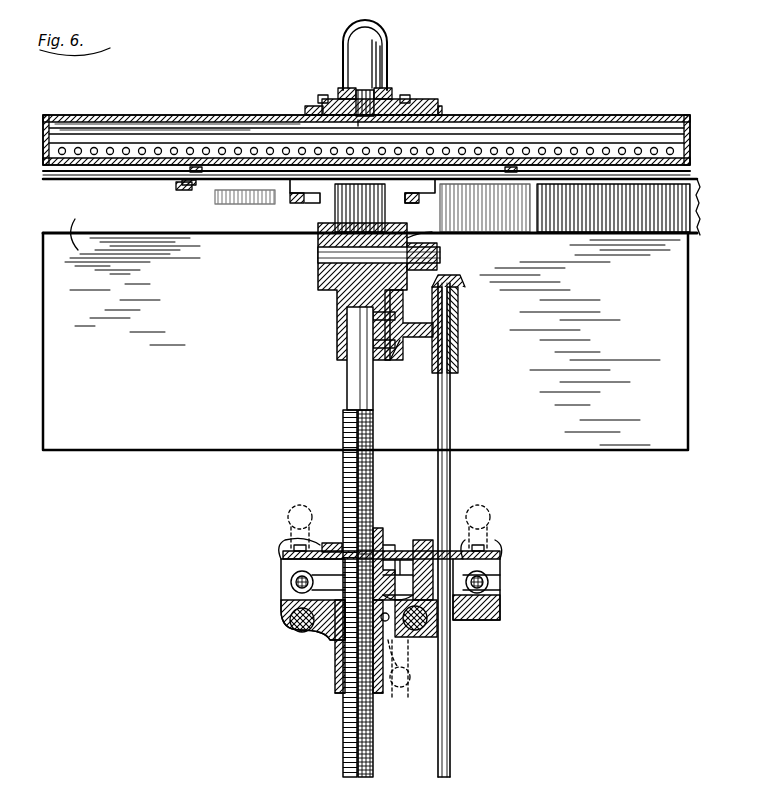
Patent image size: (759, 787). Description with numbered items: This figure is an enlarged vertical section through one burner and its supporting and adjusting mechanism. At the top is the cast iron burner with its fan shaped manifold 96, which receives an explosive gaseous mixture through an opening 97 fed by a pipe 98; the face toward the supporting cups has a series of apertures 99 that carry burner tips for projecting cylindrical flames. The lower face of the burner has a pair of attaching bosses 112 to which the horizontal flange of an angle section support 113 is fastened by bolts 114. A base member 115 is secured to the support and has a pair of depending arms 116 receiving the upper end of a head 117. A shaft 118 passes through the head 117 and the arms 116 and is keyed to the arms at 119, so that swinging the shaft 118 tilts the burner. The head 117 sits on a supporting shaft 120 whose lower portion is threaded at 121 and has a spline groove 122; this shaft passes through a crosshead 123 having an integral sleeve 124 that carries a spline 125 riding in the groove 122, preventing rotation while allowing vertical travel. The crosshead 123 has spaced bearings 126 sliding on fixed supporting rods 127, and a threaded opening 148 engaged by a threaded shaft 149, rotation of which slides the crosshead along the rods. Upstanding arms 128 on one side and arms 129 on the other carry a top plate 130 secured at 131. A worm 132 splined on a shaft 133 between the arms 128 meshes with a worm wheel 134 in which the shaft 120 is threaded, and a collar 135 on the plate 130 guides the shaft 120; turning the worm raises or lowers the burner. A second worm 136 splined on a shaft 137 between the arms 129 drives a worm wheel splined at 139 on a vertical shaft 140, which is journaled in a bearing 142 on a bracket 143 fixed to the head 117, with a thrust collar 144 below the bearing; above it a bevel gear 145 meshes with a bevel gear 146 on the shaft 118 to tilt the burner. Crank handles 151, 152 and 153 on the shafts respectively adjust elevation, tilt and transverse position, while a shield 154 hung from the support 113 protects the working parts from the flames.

The manifold 96 is at (452, 135).
The opening 97 is at (356, 133).
The pipe 98 is at (372, 44).
The apertures 99 is at (488, 150).
The attaching bosses 112 is at (168, 172).
The support 113 is at (365, 334).
The bolts 114 is at (182, 190).
The base member 115 is at (288, 197).
The depending arms 116 is at (428, 236).
The head 117 is at (372, 282).
The shaft 118 is at (335, 270).
The key 119 is at (318, 245).
The supporting shaft 120 is at (370, 385).
The threaded portion 121 is at (347, 410).
The spline groove 122 is at (345, 430).
The crosshead 123 is at (330, 640).
The sleeve portion 124 is at (334, 685).
The spline 125 is at (345, 690).
The bearings 126 is at (281, 630).
The supporting rods 127 is at (281, 620).
The upstanding arms 128 is at (283, 557).
The arms 129 is at (500, 555).
The top plate 130 is at (283, 545).
The securing means 131 is at (485, 545).
The worm 132 is at (281, 575).
The shaft 133 is at (290, 583).
The worm wheel 134 is at (318, 550).
The collar 135 is at (380, 528).
The second worm 136 is at (495, 572).
The shaft 137 is at (500, 590).
The spline 139 is at (405, 551).
The vertical shaft 140 is at (450, 468).
The bearing 142 is at (458, 334).
The bracket 143 is at (407, 358).
The thrust collar 144 is at (458, 365).
The bevel gear 145 is at (462, 282).
The bevel gear 146 is at (440, 258).
The threaded opening 148 is at (407, 675).
The shaft 149 is at (415, 637).
The crank handle 151 is at (287, 517).
The crank handle 152 is at (488, 514).
The crank handle 153 is at (403, 686).
The shields 154 is at (372, 341).